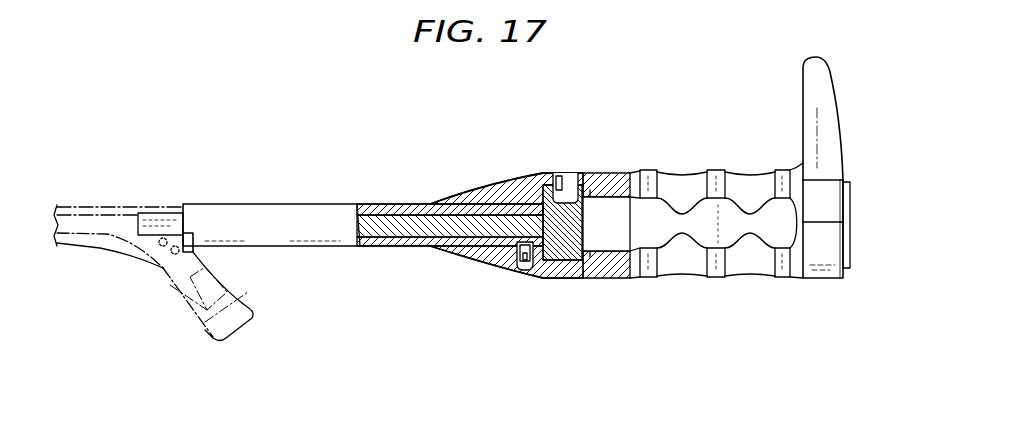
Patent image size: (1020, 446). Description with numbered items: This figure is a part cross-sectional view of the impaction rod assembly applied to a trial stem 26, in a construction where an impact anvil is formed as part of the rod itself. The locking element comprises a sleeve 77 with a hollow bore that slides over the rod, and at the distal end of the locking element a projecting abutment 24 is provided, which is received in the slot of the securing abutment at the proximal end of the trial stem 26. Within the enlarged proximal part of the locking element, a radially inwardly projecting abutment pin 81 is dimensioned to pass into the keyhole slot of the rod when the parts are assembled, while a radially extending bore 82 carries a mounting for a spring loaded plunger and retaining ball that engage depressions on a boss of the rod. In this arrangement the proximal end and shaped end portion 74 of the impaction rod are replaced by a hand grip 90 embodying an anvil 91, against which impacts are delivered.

The sleeve 77 is at (273, 204).
The shaped end portion 74 is at (497, 181).
The abutment pin 81 is at (561, 188).
The radially extending bore 82 is at (525, 264).
The hand grip 90 is at (678, 258).
The anvil 91 is at (850, 232).
The trial stem 26 is at (125, 255).
The projecting abutment 24 is at (193, 252).